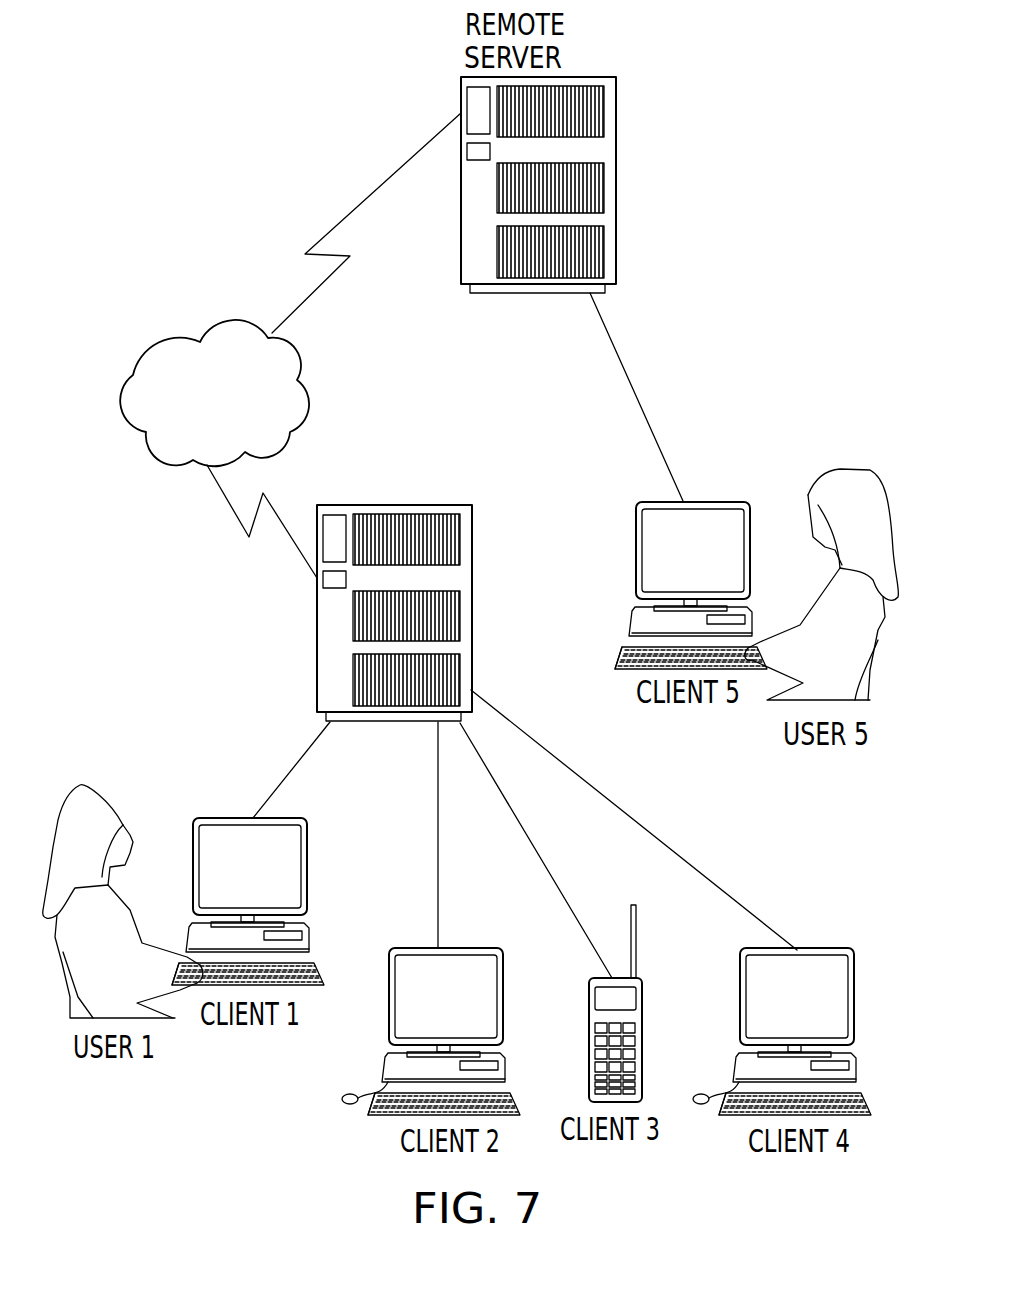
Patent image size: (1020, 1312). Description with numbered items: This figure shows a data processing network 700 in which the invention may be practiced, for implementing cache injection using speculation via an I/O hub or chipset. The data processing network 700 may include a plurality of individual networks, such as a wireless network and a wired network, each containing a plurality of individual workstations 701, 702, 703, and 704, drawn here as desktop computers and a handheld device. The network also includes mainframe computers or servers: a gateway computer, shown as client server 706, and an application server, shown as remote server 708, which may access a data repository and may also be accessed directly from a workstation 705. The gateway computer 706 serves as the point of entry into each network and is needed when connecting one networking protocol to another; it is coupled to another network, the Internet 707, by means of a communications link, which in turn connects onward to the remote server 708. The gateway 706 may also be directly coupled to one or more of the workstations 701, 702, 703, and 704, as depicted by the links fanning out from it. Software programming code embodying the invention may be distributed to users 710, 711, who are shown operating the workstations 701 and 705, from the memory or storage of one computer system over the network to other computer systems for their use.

The data processing network 700 is at (165, 586).
The workstation 701 is at (224, 883).
The workstation 702 is at (424, 1013).
The workstation 703 is at (643, 1026).
The workstation 704 is at (775, 1013).
The workstation 705 is at (675, 566).
The gateway computer 706 is at (471, 558).
The Internet 707 is at (173, 340).
The remote server 708 is at (617, 129).
The user 710 is at (96, 795).
The user 711 is at (852, 485).